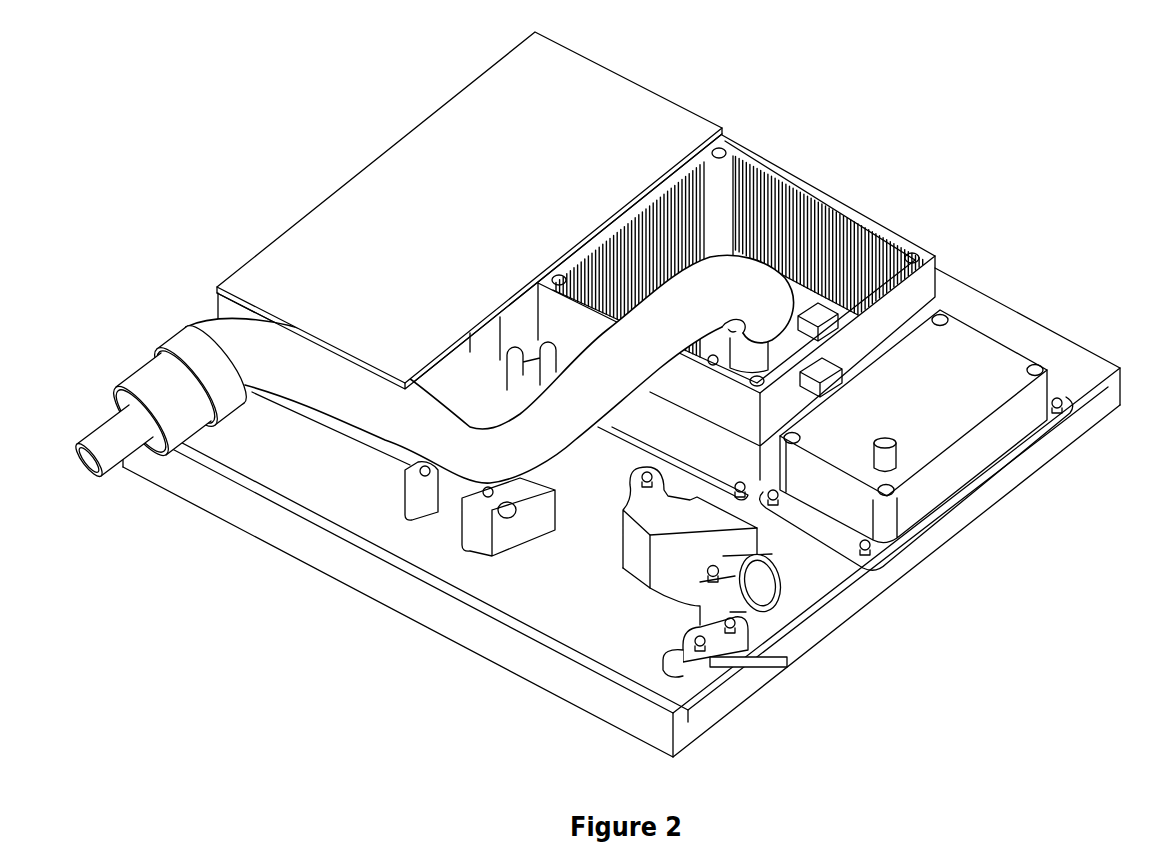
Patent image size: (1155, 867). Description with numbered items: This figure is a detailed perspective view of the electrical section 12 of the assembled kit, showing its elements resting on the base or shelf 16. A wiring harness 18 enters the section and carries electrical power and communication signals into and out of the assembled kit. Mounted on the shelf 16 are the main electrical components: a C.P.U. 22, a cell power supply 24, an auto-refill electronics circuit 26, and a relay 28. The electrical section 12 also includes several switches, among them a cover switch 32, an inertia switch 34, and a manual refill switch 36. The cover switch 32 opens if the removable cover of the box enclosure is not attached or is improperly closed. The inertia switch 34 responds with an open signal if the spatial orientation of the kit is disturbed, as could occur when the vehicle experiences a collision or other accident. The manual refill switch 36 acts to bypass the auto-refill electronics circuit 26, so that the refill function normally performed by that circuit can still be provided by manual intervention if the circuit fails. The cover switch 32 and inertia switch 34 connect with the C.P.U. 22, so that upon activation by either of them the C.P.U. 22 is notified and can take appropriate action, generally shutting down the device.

The electrical section 12 is at (168, 211).
The base or shelf 16 is at (396, 606).
The wiring harness 18 is at (137, 366).
The C.P.U. 22 is at (822, 303).
The cell power supply 24 is at (618, 82).
The auto-refill electronics circuit 26 is at (990, 353).
The relay 28 is at (517, 382).
The cover switch 32 is at (742, 668).
The inertia switch 34 is at (670, 583).
The manual refill switch 36 is at (897, 442).